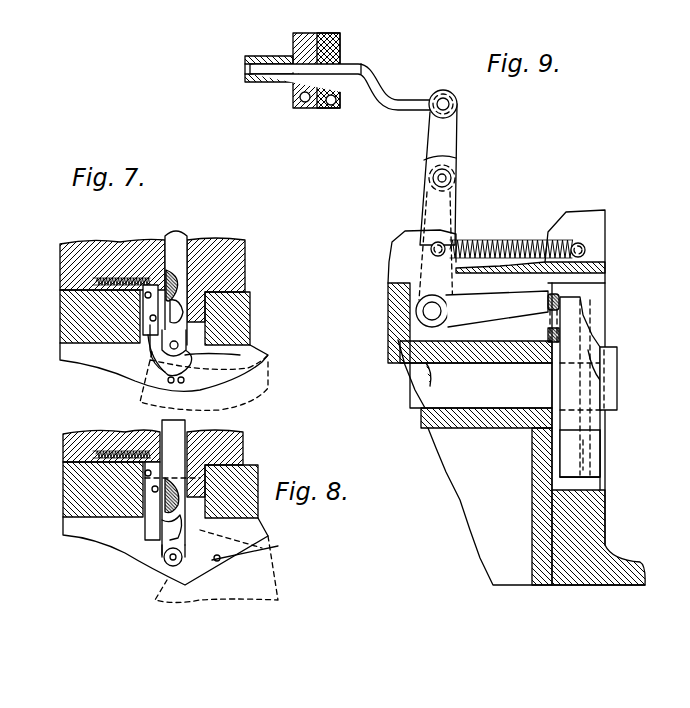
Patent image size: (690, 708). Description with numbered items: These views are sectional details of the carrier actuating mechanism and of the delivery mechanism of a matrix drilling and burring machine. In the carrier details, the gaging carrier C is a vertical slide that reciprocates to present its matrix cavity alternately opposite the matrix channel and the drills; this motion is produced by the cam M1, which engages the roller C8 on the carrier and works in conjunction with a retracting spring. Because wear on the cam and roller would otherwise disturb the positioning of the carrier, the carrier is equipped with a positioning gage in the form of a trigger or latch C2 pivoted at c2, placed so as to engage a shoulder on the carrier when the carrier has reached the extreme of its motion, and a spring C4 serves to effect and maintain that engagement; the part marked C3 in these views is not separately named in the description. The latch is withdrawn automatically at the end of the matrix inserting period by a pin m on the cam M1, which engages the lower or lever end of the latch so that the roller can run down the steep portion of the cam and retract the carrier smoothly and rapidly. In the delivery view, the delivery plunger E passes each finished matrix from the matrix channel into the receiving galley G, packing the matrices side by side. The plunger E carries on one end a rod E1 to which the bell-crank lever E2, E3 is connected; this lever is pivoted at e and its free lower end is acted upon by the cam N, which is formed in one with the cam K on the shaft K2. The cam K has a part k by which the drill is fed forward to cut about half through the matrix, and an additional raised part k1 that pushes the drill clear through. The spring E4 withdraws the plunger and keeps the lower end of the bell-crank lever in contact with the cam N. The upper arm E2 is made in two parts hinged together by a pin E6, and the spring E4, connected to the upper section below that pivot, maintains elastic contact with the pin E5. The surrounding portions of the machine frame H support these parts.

In FIG. 9, the delivery plunger E is at (324, 74).
In FIG. 9, the rod E1 is at (388, 88).
In FIG. 9, the receiving or delivery galley G is at (263, 82).
In FIG. 9, the upper arm of bell-crank lever E2 is at (455, 150).
In FIG. 9, the pin E6 is at (450, 180).
In FIG. 9, the pin E5 is at (455, 215).
In FIG. 9, the spring E4 is at (520, 238).
In FIG. 9, the frame head H is at (388, 264).
In FIG. 7, the frame head H is at (250, 330).
In FIG. 8, the frame head H is at (252, 476).
In FIG. 9, the lower arm of bell-crank lever E3 is at (497, 306).
In FIG. 9, the pivot e is at (432, 311).
In FIG. 9, the cam N is at (560, 326).
In FIG. 9, the cam K is at (575, 331).
In FIG. 9, the additional raised part k1 is at (618, 386).
In FIG. 9, the part k is at (602, 449).
In FIG. 9, the shaft K2 is at (505, 400).
In FIG. 7, the gaging carrier C is at (186, 240).
In FIG. 8, the gaging carrier C is at (178, 445).
In FIG. 7, the trigger or latch C2 is at (150, 332).
In FIG. 8, the trigger or latch C2 is at (158, 458).
In FIG. 7, the pivot c2 is at (145, 308).
In FIG. 7, the cam C3 is at (182, 312).
In FIG. 7, the spring C4 is at (97, 281).
In FIG. 8, the spring C4 is at (100, 455).
In FIG. 7, the roller C8 is at (187, 347).
In FIG. 8, the roller C8 is at (172, 566).
In FIG. 7, the pin m is at (200, 392).
In FIG. 8, the pin m is at (275, 553).
In FIG. 7, the cam M1 is at (280, 406).
In FIG. 8, the cam M1 is at (208, 596).